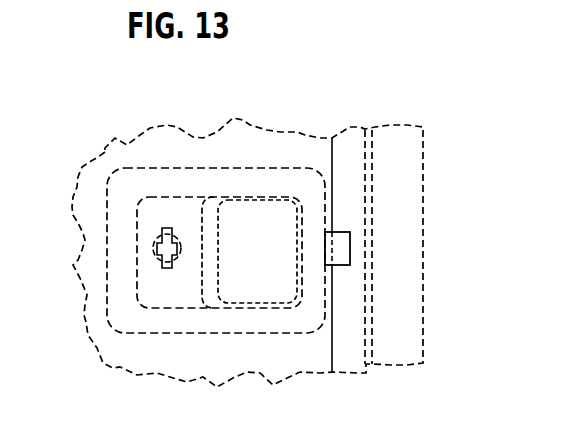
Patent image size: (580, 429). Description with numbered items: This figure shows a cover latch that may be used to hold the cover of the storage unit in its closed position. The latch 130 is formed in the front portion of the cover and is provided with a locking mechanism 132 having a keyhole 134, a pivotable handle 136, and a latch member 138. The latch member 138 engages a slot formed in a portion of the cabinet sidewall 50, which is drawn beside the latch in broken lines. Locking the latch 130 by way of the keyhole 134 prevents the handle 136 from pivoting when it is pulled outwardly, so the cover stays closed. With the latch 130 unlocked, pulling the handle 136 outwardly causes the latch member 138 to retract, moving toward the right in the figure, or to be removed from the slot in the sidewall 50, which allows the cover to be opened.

The second sidewall 50 is at (388, 125).
The opening latch 130 is at (257, 165).
The locking mechanism 132 is at (145, 257).
The keyhole 134 is at (167, 262).
The pivotable handle 136 is at (243, 222).
The latch member 138 is at (340, 232).